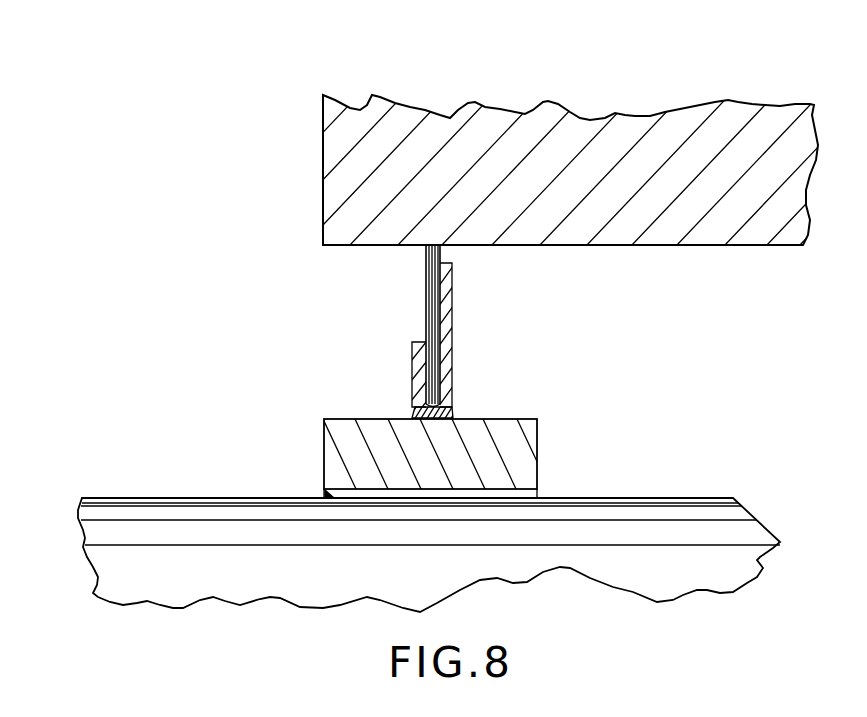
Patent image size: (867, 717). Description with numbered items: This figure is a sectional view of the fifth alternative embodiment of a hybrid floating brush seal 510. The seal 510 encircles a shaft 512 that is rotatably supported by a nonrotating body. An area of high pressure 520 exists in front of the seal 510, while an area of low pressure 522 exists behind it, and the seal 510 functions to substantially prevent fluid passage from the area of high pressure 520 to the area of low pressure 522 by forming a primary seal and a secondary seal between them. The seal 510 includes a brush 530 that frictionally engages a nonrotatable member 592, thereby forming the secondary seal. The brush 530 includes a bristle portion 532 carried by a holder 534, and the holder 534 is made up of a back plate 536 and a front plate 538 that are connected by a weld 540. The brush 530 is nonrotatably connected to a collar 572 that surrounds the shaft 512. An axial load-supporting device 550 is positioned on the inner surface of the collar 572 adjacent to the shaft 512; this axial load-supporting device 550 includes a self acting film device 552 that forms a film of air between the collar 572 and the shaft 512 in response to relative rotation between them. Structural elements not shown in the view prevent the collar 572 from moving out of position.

The nonrotatable member 592 is at (450, 120).
The area of high pressure 520 is at (192, 316).
The area of low pressure 522 is at (766, 320).
The hybrid floating brush seal 510 is at (224, 383).
The brush 530 is at (424, 280).
The bristle portion 532 is at (444, 254).
The back plate 536 is at (455, 298).
The holder 534 is at (465, 356).
The front plate 538 is at (412, 355).
The weld 540 is at (456, 408).
The collar 572 is at (540, 440).
The self acting film device 552 is at (537, 493).
The axial load-supporting device 550 is at (343, 493).
The shaft 512 is at (118, 515).